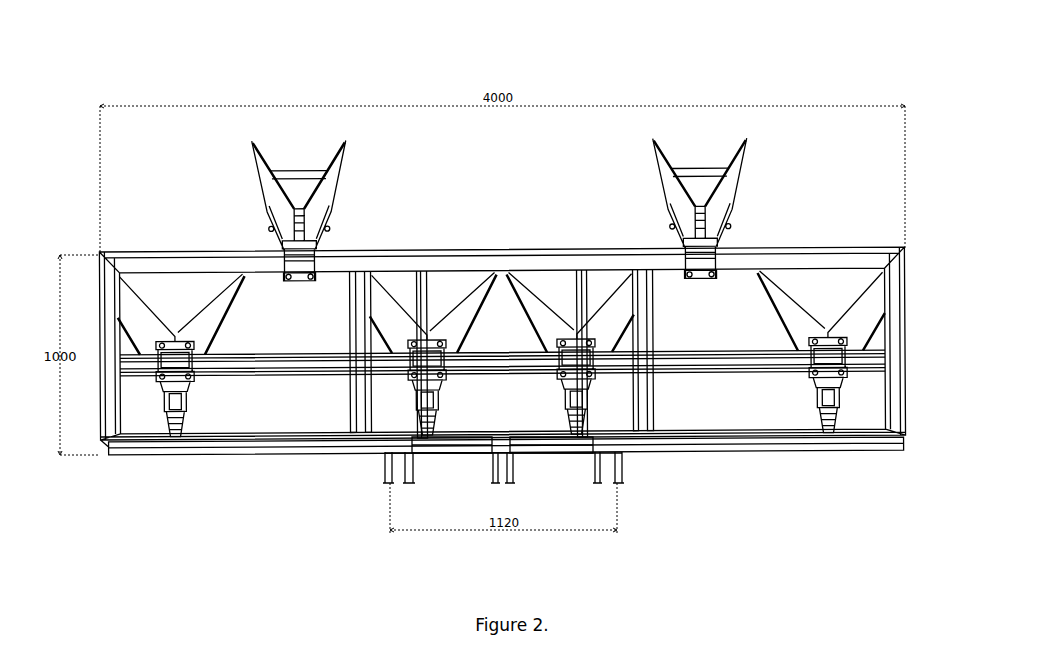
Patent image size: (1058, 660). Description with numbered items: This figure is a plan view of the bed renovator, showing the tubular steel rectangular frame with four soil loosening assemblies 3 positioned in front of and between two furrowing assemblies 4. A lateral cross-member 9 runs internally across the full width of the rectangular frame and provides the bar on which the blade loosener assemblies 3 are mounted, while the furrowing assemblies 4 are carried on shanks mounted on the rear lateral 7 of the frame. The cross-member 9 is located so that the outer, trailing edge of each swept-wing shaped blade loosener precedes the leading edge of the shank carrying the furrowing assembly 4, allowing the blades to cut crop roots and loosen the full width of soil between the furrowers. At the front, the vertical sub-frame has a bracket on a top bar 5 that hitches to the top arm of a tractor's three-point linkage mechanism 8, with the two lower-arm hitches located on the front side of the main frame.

The soil loosening assembly 3 is at (445, 325).
The furrowing assembly 4 is at (271, 199).
The top bar 5 is at (485, 472).
The rear lateral 7 is at (415, 290).
The three-point linkage mechanism 8 is at (628, 484).
The lateral cross-member 9 is at (519, 348).